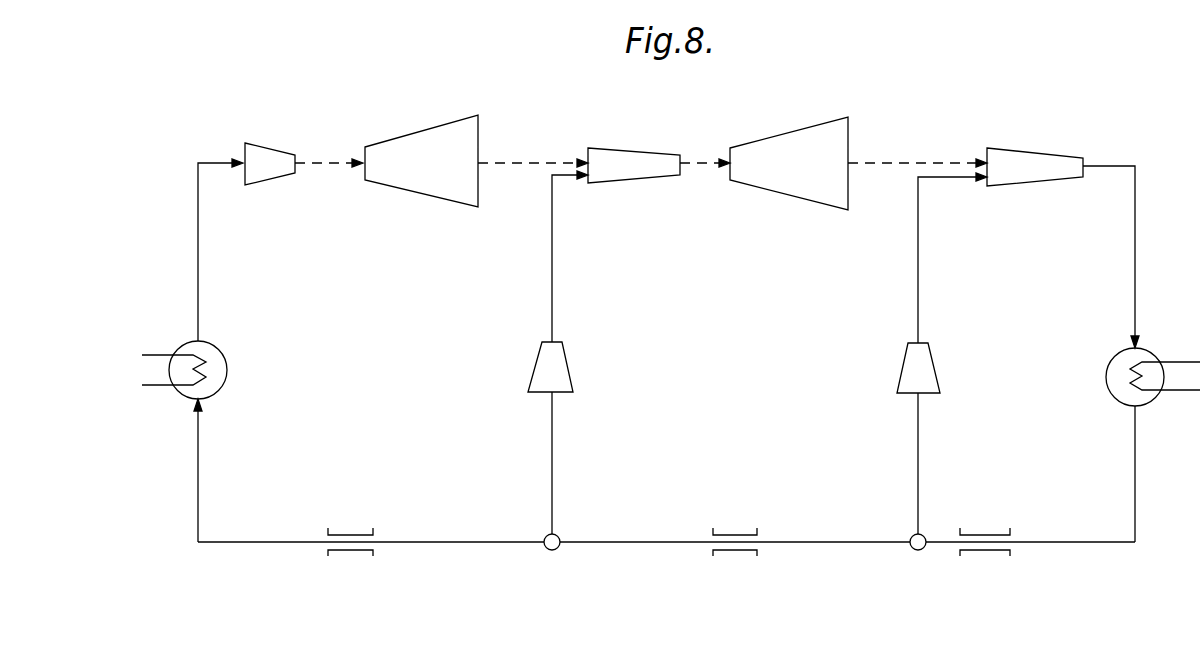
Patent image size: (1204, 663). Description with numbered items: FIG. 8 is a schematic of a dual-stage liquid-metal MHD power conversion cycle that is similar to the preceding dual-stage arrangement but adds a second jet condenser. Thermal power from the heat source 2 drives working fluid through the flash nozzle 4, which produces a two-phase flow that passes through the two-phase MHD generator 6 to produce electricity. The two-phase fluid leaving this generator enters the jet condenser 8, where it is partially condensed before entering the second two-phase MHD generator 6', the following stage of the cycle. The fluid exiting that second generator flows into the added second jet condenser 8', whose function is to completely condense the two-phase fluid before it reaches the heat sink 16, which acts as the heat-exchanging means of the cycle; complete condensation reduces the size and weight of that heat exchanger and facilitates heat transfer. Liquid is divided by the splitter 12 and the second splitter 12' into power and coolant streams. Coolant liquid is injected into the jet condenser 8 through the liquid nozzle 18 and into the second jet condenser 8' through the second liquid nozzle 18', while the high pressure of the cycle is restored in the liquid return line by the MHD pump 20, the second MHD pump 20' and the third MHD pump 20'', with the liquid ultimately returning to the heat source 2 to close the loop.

The heat source 2 is at (188, 392).
The flash nozzle 4 is at (278, 168).
The two-phase MHD generator 6 is at (421, 154).
The second two-phase MHD generator 6' is at (789, 154).
The jet condenser 8 is at (634, 170).
The second jet condenser 8' is at (1035, 170).
The splitter 12 is at (542, 548).
The second splitter 12' is at (903, 549).
The heat sink 16 is at (1143, 398).
The liquid nozzle 18 is at (529, 367).
The second liquid nozzle 18' is at (899, 368).
The MHD pump 20 is at (352, 549).
The second MHD pump 20' is at (736, 549).
The third MHD pump 20'' is at (990, 549).